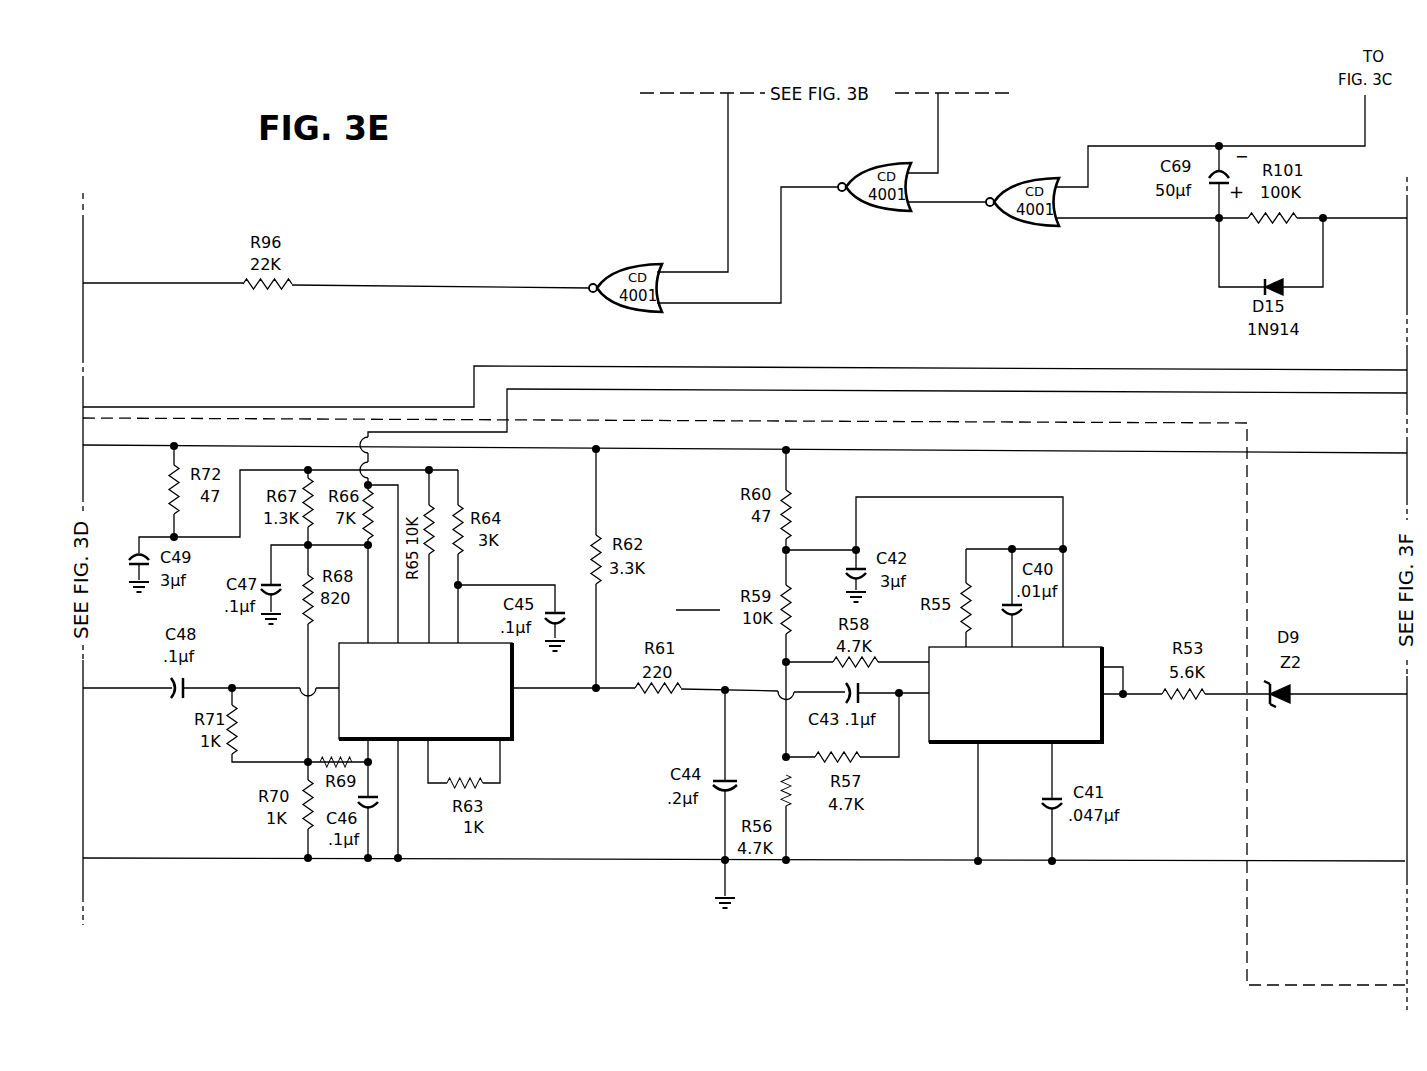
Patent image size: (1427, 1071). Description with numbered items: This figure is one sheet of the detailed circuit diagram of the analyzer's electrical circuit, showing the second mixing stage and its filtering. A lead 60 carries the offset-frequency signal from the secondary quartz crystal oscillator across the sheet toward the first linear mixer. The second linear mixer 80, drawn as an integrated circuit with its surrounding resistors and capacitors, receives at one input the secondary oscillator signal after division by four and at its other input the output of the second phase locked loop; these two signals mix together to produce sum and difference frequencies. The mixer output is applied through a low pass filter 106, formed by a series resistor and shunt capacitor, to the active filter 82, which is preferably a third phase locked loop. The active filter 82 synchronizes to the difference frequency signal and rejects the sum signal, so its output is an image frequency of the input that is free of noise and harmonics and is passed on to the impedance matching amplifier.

The lead 60 is at (1002, 367).
The second linear mixer 80 is at (515, 725).
The active filter 82 is at (1011, 872).
The low pass filter 106 is at (698, 684).